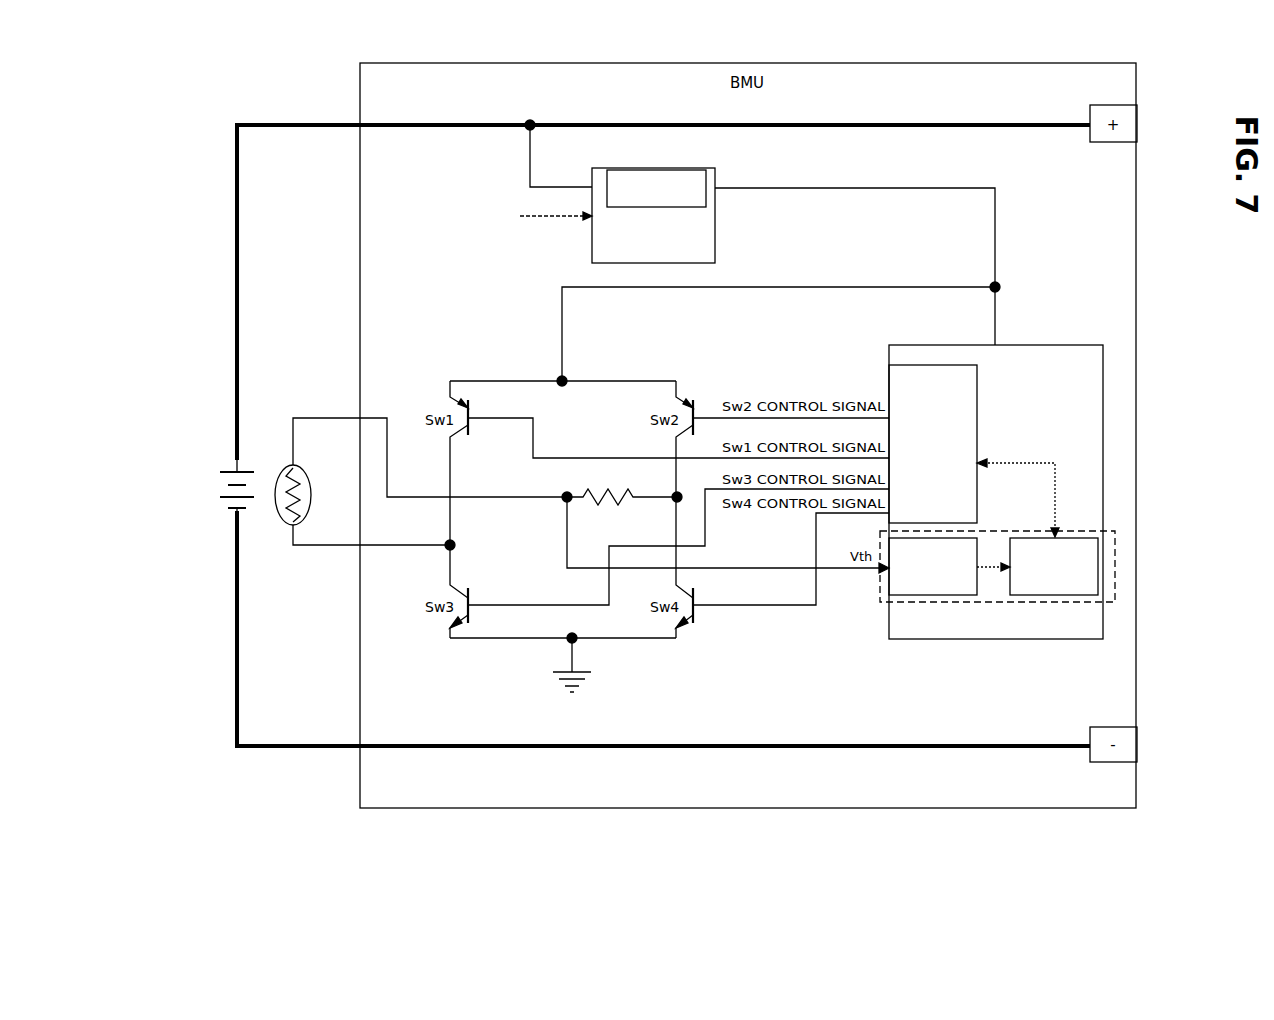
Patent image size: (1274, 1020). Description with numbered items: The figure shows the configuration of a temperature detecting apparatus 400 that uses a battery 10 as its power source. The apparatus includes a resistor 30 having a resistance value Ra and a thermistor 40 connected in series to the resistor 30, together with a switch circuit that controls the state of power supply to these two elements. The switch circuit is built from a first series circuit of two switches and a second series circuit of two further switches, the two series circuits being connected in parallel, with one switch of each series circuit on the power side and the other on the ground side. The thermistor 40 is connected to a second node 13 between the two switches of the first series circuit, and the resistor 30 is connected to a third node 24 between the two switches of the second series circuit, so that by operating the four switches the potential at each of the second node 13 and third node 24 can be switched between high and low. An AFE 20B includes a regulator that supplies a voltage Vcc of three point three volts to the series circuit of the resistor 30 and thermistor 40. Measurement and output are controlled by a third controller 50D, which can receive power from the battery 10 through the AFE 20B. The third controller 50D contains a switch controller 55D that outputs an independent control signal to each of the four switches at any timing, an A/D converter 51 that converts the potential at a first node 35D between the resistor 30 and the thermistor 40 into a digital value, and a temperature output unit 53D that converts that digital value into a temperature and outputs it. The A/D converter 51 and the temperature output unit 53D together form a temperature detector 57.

The temperature detecting apparatus 400 is at (291, 117).
The battery 10 is at (215, 503).
The thermistor 40 is at (298, 470).
The second node 13 is at (450, 549).
The resistor 30 is at (600, 492).
The first node 35D is at (563, 501).
The third node 24 is at (675, 503).
The AFE 20B is at (660, 169).
The third controller 50D is at (1025, 345).
The switch controller 55D is at (977, 452).
The A/D converter 51 is at (912, 595).
The temperature output unit 53D is at (1065, 595).
The temperature detector 57 is at (1115, 568).